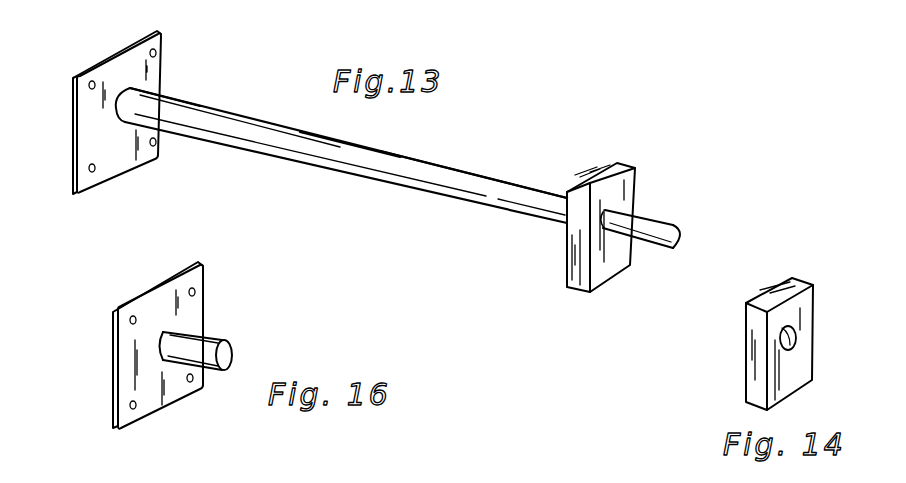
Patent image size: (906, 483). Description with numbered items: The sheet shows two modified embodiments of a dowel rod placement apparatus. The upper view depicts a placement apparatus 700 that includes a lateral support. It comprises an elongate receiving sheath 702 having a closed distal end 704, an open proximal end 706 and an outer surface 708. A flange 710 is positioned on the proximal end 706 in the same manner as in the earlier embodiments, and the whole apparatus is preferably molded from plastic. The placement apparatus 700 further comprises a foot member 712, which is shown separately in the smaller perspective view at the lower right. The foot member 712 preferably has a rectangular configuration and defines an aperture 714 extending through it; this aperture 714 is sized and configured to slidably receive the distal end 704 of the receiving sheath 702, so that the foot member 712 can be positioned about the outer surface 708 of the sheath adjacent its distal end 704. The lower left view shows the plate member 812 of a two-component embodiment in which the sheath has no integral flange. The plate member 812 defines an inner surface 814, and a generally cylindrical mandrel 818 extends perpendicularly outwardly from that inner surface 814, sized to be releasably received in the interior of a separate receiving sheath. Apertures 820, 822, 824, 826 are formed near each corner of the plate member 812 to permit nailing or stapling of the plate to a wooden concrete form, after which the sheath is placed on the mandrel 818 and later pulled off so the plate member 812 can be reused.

In FIG. 13, the placement apparatus 700 is at (456, 157).
In FIG. 13, the receiving sheath 702 is at (490, 200).
In FIG. 13, the closed distal end 704 is at (685, 238).
In FIG. 13, the open proximal end 706 is at (142, 102).
In FIG. 13, the outer surface 708 is at (317, 150).
In FIG. 13, the flange 710 is at (122, 160).
In FIG. 13, the foot member 712 is at (601, 227).
In FIG. 14, the foot member 712 is at (752, 320).
In FIG. 13, the aperture 714 is at (628, 188).
In FIG. 14, the aperture 714 is at (785, 340).
In FIG. 16, the plate member 812 is at (102, 325).
In FIG. 16, the inner surface 814 is at (130, 365).
In FIG. 16, the mandrel 818 is at (212, 340).
In FIG. 16, the aperture 820 is at (133, 316).
In FIG. 16, the aperture 822 is at (195, 290).
In FIG. 16, the aperture 824 is at (130, 408).
In FIG. 16, the aperture 826 is at (190, 380).